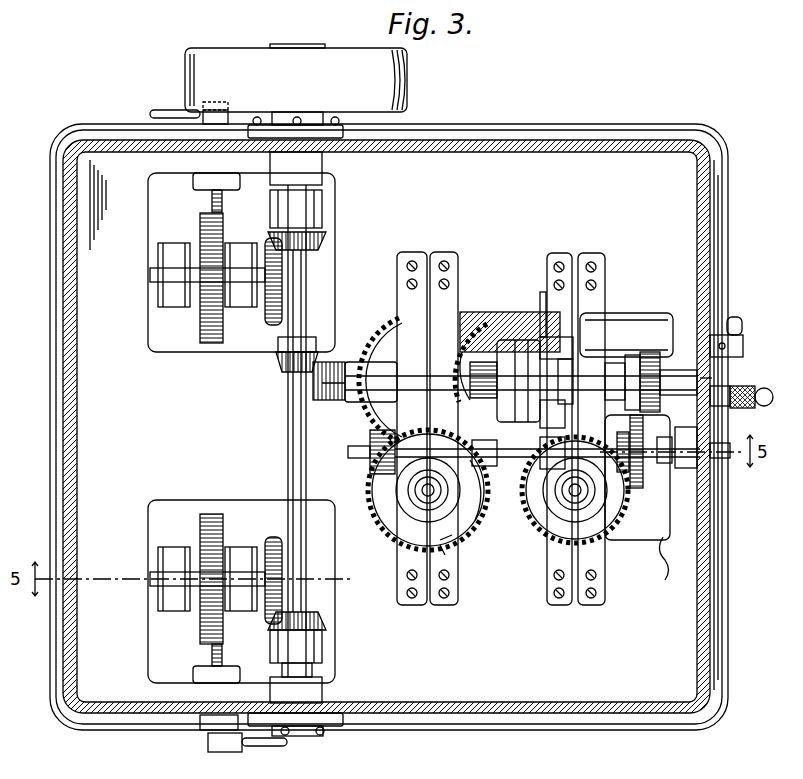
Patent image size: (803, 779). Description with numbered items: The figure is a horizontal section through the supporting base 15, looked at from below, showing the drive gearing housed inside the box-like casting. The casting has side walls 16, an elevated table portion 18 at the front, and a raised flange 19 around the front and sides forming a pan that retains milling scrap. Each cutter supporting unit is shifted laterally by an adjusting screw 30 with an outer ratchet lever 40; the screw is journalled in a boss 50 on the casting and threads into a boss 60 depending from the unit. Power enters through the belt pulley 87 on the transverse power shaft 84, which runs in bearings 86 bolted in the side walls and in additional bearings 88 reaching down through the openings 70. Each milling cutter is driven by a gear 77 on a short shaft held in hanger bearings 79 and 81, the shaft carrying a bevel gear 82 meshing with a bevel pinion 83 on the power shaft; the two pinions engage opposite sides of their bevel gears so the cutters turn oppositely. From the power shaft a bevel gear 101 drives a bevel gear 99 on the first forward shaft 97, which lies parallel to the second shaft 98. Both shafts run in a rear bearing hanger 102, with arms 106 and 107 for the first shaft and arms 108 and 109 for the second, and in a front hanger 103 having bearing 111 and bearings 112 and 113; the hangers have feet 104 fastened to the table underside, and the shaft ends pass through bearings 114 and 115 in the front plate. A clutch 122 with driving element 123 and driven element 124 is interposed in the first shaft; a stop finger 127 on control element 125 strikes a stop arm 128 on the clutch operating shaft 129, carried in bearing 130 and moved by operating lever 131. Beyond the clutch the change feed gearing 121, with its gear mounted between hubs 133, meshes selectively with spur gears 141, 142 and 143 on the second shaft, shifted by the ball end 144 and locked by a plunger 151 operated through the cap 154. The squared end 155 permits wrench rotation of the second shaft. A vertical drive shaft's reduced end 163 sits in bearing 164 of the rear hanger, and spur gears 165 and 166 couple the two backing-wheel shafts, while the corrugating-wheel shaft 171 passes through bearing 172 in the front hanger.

The supporting base 15 is at (60, 681).
The side walls 16 is at (690, 135).
The elevated table portion 18 is at (659, 561).
The raised flange 19 is at (50, 661).
The adjusting screws 30 is at (222, 200).
The ratchet levers 40 is at (190, 112).
The bosses 50 is at (250, 125).
The bosses 60 is at (230, 178).
The openings 70 is at (152, 235).
The gear 77 is at (200, 222).
The bearing 79 is at (160, 270).
The bearing 81 is at (240, 255).
The bevel gear 82 is at (275, 325).
The bevel pinion 83 is at (326, 238).
The transverse power shaft 84 is at (306, 262).
The bearings 86 is at (322, 160).
The belt pulley 87 is at (407, 108).
The bearings 88 is at (322, 198).
The first shaft 97 is at (335, 400).
The second shaft 98 is at (510, 457).
The bevel gear 99 is at (314, 372).
The bevel gear 101 is at (290, 348).
The rear bearing hanger 102 is at (405, 525).
The front bearing hanger 103 is at (548, 525).
The feet 104 is at (438, 254).
The bearing arm 106 is at (352, 364).
The bearing arm 107 is at (482, 318).
The bearing arm 108 is at (370, 448).
The bearing arm 109 is at (488, 512).
The bearing 111 is at (560, 420).
The bearing 112 is at (543, 490).
The bearing 113 is at (660, 537).
The bearing 114 is at (700, 372).
The bearing 115 is at (697, 462).
The change feed gearing 121 is at (650, 352).
The clutch 122 is at (518, 340).
The driving element 123 is at (468, 352).
The driven element 124 is at (543, 295).
The control element 125 is at (500, 428).
The stop finger 127 is at (484, 400).
The stop arm 128 is at (522, 390).
The clutch operating shaft 129 is at (634, 350).
The bearing 130 is at (560, 345).
The operating lever 131 is at (740, 336).
The hubs 133 is at (646, 372).
The spur gear 141 is at (625, 472).
The spur gear 142 is at (640, 488).
The spur gear 143 is at (668, 463).
The ball end 144 is at (715, 376).
The locking plunger 151 is at (734, 326).
The cylindrical cap 154 is at (745, 408).
The squared projecting end 155 is at (730, 455).
The lower reduced end 163 is at (452, 540).
The bearing 164 is at (356, 458).
The spur gear 165 is at (445, 545).
The spur gear 166 is at (388, 320).
The shaft 171 is at (575, 510).
The bearing 172 is at (548, 448).